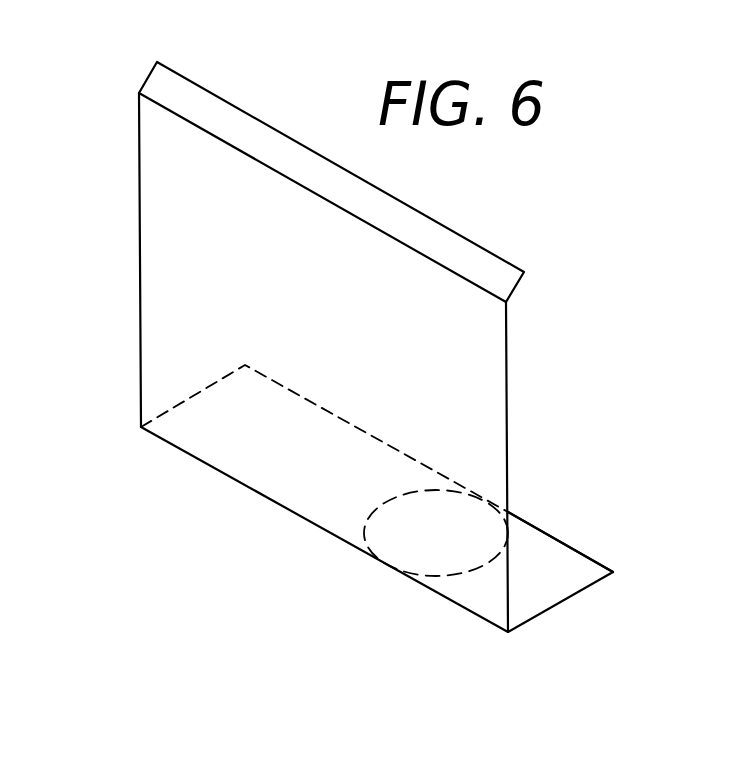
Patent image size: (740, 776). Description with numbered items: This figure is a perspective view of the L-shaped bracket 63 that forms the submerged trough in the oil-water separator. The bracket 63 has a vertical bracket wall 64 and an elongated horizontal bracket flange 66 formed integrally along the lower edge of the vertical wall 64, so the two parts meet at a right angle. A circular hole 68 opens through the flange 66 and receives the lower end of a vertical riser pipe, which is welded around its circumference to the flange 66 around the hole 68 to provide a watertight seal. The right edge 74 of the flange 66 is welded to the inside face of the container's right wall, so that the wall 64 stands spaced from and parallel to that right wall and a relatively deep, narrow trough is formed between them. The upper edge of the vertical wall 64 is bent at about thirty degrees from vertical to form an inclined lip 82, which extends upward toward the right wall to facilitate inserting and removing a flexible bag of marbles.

The L-shaped bracket 63 is at (341, 322).
The vertical bracket wall 64 is at (490, 338).
The horizontal bracket flange 66 is at (403, 498).
The circular hole 68 is at (494, 490).
The right edge of the bracket flange 74 is at (562, 540).
The inclined lip 82 is at (150, 80).